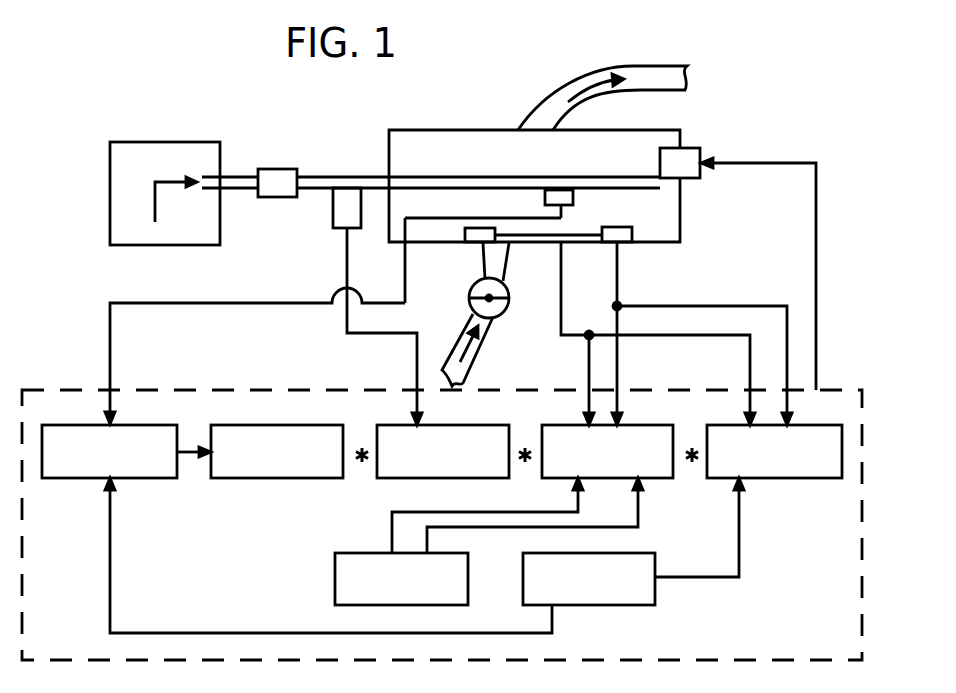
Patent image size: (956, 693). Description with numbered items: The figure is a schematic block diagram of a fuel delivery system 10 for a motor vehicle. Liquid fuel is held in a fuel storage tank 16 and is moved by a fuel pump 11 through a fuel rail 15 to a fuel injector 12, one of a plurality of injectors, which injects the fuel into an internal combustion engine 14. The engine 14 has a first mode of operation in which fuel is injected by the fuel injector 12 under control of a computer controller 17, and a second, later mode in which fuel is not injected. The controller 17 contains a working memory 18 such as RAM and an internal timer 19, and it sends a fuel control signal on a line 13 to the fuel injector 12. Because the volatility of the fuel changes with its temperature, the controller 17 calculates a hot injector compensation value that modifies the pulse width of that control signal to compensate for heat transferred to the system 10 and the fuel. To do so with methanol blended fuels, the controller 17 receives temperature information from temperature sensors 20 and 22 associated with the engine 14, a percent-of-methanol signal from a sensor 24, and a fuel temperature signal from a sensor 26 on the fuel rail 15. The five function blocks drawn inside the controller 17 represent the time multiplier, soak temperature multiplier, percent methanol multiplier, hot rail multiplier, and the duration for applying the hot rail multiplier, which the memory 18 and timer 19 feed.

The fuel delivery system 10 is at (145, 82).
The fuel pump 11 is at (276, 168).
The fuel injector 12 is at (692, 148).
The line 13 is at (816, 210).
The internal combustion engine 14 is at (428, 130).
The fuel rail 15 is at (424, 177).
The fuel storage tank 16 is at (196, 141).
The computer controller 17 is at (806, 650).
The working memory 18 is at (335, 575).
The internal timer 19 is at (618, 605).
The temperature sensor 20 is at (443, 240).
The temperature sensor 22 is at (633, 236).
The percent-of-methanol sensor 24 is at (333, 212).
The fuel rail temperature sensor 26 is at (575, 198).